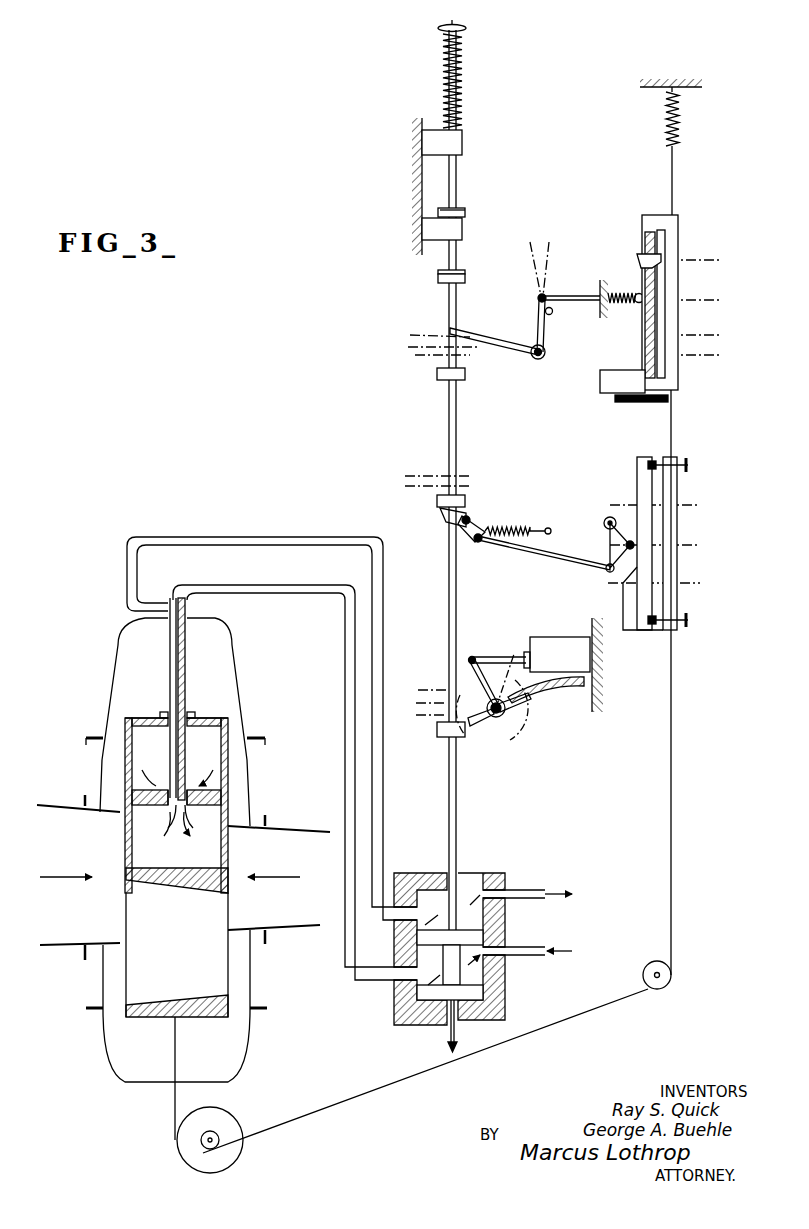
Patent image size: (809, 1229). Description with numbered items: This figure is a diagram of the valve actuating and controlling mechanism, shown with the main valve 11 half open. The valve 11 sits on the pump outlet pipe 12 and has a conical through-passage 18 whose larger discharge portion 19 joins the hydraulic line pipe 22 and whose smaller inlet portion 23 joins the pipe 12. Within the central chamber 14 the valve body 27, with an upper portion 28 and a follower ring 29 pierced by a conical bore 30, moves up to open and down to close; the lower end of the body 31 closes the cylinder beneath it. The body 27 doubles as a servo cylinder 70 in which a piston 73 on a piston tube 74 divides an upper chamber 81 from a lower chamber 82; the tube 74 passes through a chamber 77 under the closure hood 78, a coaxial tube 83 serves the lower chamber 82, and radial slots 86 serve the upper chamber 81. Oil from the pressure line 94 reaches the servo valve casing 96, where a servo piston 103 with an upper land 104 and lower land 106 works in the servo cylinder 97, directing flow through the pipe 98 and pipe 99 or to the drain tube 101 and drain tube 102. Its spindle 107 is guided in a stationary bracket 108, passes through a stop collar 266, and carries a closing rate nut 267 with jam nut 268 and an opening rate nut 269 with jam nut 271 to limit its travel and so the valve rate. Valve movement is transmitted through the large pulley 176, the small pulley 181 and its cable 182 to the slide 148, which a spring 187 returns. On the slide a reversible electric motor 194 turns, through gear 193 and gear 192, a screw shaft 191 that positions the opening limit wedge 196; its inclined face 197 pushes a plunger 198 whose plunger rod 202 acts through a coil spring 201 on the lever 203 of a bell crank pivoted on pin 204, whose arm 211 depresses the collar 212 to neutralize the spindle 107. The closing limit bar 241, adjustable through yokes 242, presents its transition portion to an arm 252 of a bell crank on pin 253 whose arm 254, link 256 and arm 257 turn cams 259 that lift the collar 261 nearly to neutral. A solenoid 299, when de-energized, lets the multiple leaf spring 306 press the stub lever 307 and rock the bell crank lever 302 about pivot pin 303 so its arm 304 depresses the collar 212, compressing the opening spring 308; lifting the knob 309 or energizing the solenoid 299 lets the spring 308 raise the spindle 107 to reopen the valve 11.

The valve 11 is at (252, 776).
The pump outlet pipe 12 is at (298, 928).
The central chamber 14 is at (103, 762).
The conical through-passage 18 is at (253, 832).
The discharge portion 19 is at (110, 812).
The hydraulic line pipe 22 is at (42, 804).
The inlet portion 23 is at (250, 929).
The valve body 27 is at (230, 868).
The upper portion 28 is at (229, 736).
The follower ring 29 is at (125, 986).
The conical bore 30 is at (196, 893).
The vessel bottom 31 is at (110, 1060).
The circular cylinder 70 is at (132, 852).
The piston 73 is at (205, 806).
The piston tube 74 is at (186, 644).
The chamber 77 is at (116, 662).
The closure hood 78 is at (231, 644).
The upper chamber 81 is at (143, 728).
The lower chamber 82 is at (166, 876).
The tube 83 is at (170, 644).
The radial slots 86 is at (190, 786).
The pressure line 94 is at (528, 955).
The servo valve casing 96 is at (486, 874).
The servo cylinder 97 is at (422, 892).
The pipe 98 is at (384, 804).
The pipe 99 is at (345, 804).
The drain tube 101 is at (523, 894).
The drain tube 102 is at (444, 1016).
The servo piston 103 is at (416, 973).
The upper land 104 is at (484, 937).
The lower land 106 is at (484, 994).
The spindle 107 is at (448, 427).
The stationary bracket 108 is at (463, 136).
The slide 148 is at (679, 223).
The large pulley 176 is at (184, 1165).
The small pulley 181 is at (178, 1144).
The cable 182 is at (672, 915).
The spring 187 is at (680, 135).
The screw shaft 191 is at (661, 355).
The gear 192 is at (645, 403).
The gear 193 is at (614, 397).
The reversible electric motor 194 is at (600, 380).
The opening limit wedge 196 is at (662, 259).
The inclined face 197 is at (638, 266).
The plunger 198 is at (643, 297).
The coil spring 201 is at (620, 306).
The plunger rod 202 is at (573, 292).
The lever 203 is at (545, 329).
The pin 204 is at (546, 353).
The arm 211 is at (478, 338).
The collar 212 is at (466, 375).
The closing limit bar 241 is at (637, 465).
The yokes 242 is at (650, 626).
The arm 252 is at (632, 540).
The pin 253 is at (605, 518).
The arm 254 is at (606, 545).
The link 256 is at (505, 548).
The arm 257 is at (480, 528).
The cams 259 is at (452, 520).
The collar 261 is at (466, 500).
The stop collar 266 is at (463, 232).
The closing rate nut 267 is at (466, 217).
The jam nut 268 is at (459, 208).
The opening rate nut 269 is at (464, 272).
The jam nut 271 is at (466, 280).
The solenoid 299 is at (566, 640).
The bell crank lever 302 is at (469, 674).
The pivot pin 303 is at (505, 715).
The arm 304 is at (478, 726).
The multiple leaf spring 306 is at (575, 690).
The stub lever 307 is at (520, 700).
The opening spring 308 is at (463, 92).
The knob 309 is at (466, 28).